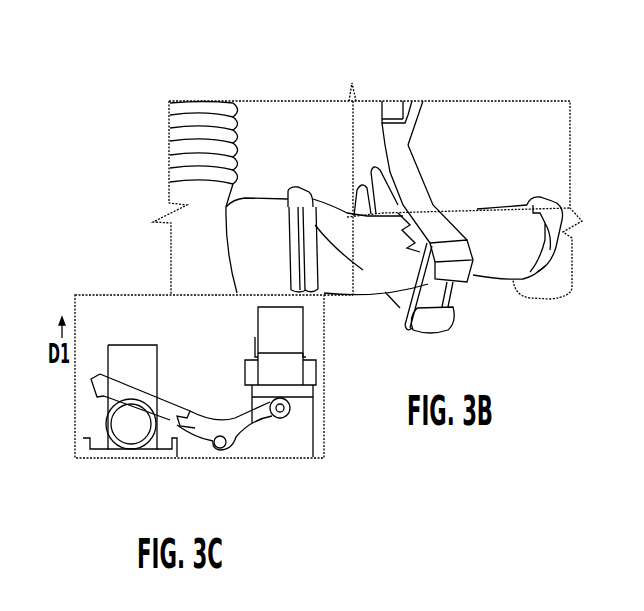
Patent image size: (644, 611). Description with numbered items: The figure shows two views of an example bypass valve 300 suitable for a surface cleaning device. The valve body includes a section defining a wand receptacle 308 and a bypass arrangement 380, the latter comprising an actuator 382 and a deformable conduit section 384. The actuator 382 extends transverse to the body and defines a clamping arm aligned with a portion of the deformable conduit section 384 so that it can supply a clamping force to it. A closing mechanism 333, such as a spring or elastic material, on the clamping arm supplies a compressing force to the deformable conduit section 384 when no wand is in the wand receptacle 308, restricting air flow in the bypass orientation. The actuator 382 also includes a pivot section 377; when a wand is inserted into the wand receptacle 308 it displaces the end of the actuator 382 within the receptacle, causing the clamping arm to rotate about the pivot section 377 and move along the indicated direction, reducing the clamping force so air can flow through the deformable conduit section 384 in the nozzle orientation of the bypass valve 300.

In FIG. 3B, the bypass valve 300 is at (310, 167).
In FIG. 3C, the bypass valve 300 is at (116, 297).
In FIG. 3C, the wand receptacle 308 is at (275, 305).
In FIG. 3B, the closing mechanism 333 is at (458, 298).
In FIG. 3C, the pivot section 377 is at (236, 442).
In FIG. 3C, the bypass arrangement 380 is at (195, 413).
In FIG. 3C, the actuator 382 is at (192, 432).
In FIG. 3B, the deformable conduit section 384 is at (489, 207).